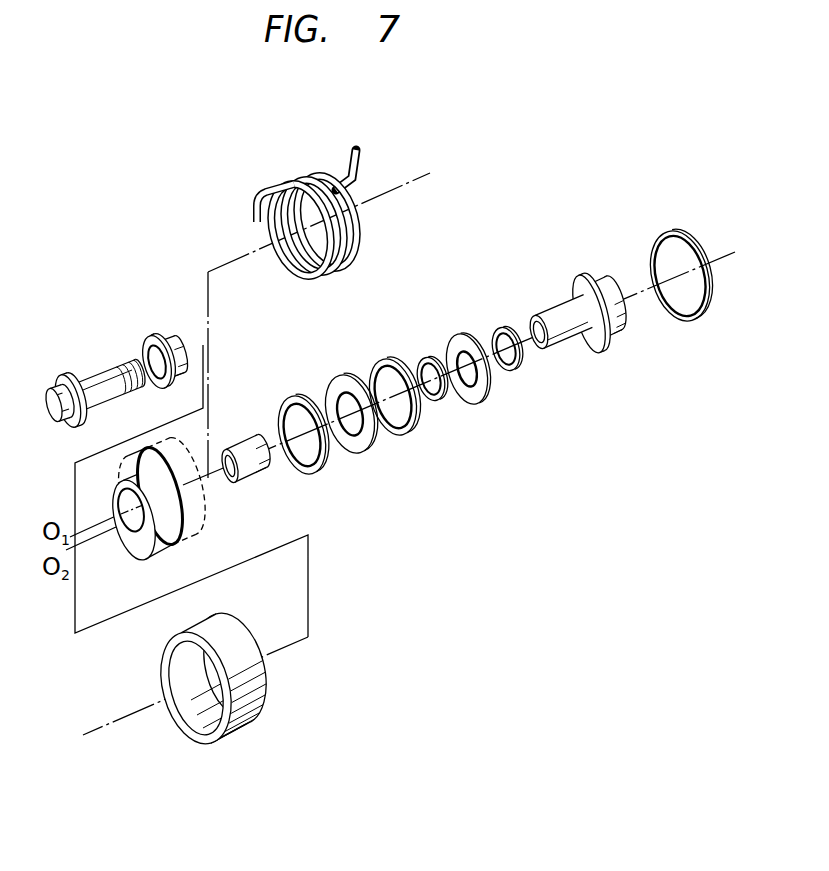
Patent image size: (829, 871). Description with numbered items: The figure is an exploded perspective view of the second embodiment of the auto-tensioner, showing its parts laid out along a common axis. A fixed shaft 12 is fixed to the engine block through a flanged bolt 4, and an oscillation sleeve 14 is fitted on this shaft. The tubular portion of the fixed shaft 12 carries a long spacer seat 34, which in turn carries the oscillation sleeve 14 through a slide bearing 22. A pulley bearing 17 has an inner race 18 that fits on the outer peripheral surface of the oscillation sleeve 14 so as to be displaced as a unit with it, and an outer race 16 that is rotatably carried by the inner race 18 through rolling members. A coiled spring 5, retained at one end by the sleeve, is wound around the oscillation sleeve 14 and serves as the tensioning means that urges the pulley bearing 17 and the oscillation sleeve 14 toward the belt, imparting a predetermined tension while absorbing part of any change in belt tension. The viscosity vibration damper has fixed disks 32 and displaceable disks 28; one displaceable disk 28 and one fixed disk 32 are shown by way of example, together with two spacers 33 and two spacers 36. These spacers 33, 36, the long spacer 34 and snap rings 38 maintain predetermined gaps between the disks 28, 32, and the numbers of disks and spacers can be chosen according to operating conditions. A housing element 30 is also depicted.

The flanged bolt 4 is at (96, 383).
The coiled spring 5 is at (352, 172).
The fixed shaft 12 is at (598, 352).
The oscillation sleeve 14 is at (137, 556).
The outer race 16 is at (238, 703).
The pulley bearing 17 is at (252, 742).
The inner race 18 is at (203, 718).
The slide bearing 22 is at (168, 338).
The displaceable disk 28 is at (358, 454).
The outer housing 30 is at (199, 514).
The fixed disk 32 is at (473, 398).
The spacer 33 is at (431, 414).
The long spacer seat 34 is at (257, 481).
The spacer 36 is at (299, 392).
The snap ring 38 is at (672, 232).